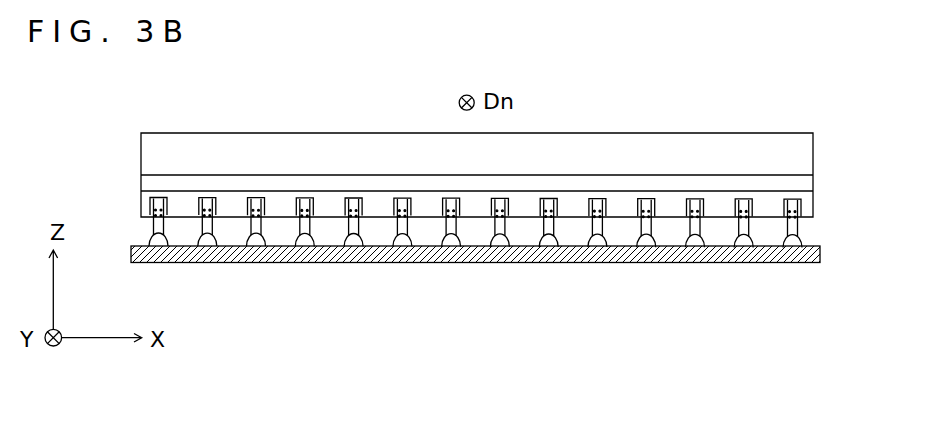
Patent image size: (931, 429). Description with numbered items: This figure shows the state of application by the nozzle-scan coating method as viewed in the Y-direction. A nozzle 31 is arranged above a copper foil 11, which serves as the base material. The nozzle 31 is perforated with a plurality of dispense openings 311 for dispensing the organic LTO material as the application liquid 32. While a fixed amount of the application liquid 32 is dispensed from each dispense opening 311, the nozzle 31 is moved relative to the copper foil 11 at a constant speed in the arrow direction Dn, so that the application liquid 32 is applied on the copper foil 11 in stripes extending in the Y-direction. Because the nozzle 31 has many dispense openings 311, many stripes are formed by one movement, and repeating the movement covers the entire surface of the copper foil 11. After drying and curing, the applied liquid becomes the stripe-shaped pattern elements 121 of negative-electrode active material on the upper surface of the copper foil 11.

The copper foil 11 is at (647, 262).
The nozzle 31 is at (400, 133).
The application liquid 32 is at (152, 225).
The stripe-shaped pattern elements 121 is at (258, 236).
The dispense openings 311 is at (294, 207).